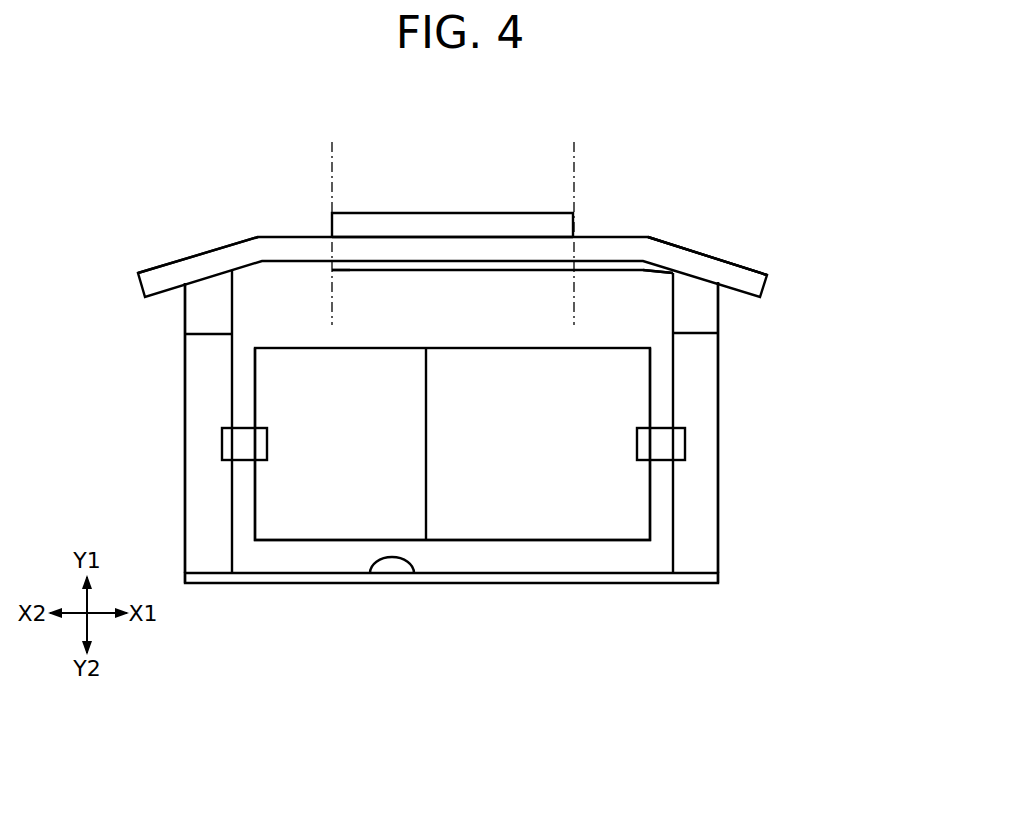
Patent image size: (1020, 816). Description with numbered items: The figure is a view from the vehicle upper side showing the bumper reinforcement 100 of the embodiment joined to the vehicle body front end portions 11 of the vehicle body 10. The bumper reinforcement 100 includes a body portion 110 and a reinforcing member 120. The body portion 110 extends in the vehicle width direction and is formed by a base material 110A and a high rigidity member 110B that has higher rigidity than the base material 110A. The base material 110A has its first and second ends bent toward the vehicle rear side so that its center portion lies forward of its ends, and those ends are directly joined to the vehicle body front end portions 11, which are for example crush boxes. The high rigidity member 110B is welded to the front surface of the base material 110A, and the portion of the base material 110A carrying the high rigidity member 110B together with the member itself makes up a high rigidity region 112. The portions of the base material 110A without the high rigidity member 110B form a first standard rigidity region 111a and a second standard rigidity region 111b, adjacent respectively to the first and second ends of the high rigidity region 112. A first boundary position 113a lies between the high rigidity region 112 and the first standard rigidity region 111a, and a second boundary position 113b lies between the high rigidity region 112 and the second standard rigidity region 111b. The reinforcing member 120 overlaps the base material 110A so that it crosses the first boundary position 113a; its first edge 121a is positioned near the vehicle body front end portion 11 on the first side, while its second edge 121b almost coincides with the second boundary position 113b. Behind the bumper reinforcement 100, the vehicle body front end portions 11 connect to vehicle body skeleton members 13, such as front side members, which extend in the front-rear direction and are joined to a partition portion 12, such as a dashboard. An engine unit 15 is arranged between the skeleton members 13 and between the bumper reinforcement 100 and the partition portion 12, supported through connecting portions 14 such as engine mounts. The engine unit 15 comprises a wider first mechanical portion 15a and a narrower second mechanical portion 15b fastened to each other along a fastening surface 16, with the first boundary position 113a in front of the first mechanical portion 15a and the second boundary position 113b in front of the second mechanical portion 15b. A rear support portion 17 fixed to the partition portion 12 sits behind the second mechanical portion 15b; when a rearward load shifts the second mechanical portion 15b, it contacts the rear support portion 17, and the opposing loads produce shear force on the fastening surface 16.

The bumper reinforcement 100 is at (808, 286).
The vehicle body 10 is at (808, 465).
The body portion 110 is at (170, 104).
The base material 110A is at (706, 253).
The high rigidity member 110B is at (548, 211).
The first standard rigidity region 111a is at (640, 235).
The second standard rigidity region 111b is at (278, 235).
The high rigidity region 112 is at (332, 142).
The first boundary position 113a is at (575, 180).
The second boundary position 113b is at (332, 195).
The reinforcing member 120 is at (607, 270).
The first edge 121a is at (689, 279).
The second edge 121b is at (321, 274).
The vehicle body front end portion 11 is at (198, 319).
The partition portion 12 is at (628, 577).
The vehicle body skeleton member 13 is at (198, 478).
The connecting portion 14 is at (240, 442).
The engine unit 15 is at (415, 652).
The first mechanical portion 15a is at (465, 502).
The second mechanical portion 15b is at (382, 500).
The fastening surface 16 is at (438, 448).
The rear support portion 17 is at (380, 565).